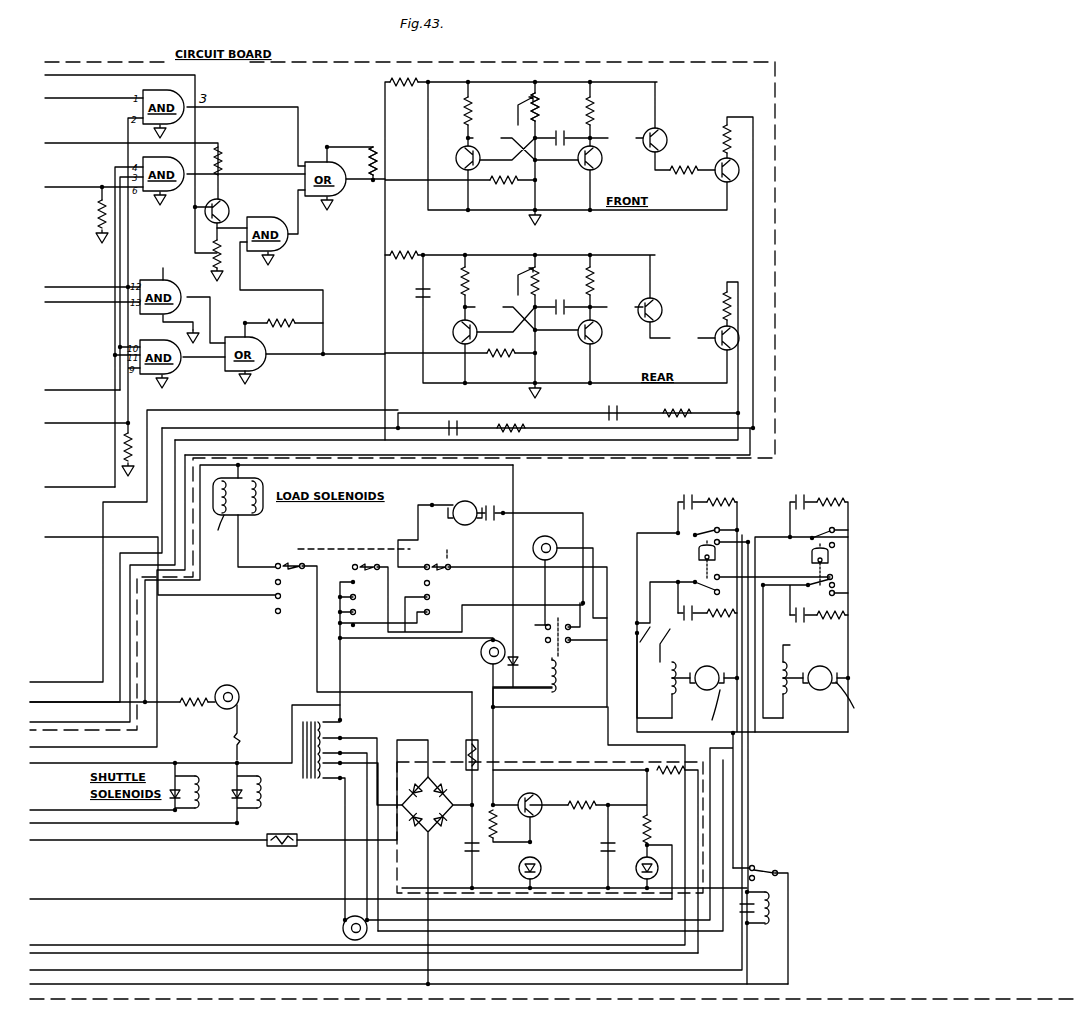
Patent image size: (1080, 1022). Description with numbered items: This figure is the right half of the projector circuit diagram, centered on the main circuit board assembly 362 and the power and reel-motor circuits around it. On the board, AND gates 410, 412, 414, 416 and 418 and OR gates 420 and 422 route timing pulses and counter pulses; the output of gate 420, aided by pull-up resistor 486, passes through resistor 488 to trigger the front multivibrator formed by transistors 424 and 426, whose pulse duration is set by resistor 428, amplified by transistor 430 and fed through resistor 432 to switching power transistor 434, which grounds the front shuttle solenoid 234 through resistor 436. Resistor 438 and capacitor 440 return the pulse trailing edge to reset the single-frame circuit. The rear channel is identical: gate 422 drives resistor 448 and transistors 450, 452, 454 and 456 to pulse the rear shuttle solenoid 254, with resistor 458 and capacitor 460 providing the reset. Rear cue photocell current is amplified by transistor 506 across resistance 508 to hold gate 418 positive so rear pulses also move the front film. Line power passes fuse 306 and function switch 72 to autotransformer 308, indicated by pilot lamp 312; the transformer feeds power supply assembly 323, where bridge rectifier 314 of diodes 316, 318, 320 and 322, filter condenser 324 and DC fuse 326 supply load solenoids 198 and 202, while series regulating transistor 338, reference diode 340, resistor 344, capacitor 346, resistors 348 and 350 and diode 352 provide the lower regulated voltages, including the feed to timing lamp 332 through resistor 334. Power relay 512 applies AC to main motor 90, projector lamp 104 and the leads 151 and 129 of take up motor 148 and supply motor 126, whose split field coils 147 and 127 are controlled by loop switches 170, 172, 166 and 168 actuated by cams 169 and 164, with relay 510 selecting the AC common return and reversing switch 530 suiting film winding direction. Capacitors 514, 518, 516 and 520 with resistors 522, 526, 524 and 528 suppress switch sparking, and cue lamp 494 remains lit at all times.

The main circuit board assembly 362 is at (777, 196).
The AND gate 410 is at (143, 92).
The AND gate 412 is at (156, 158).
The AND gate 414 is at (143, 280).
The AND gate 416 is at (180, 375).
The AND gate 418 is at (296, 250).
The OR gate 420 is at (340, 200).
The OR gate 422 is at (266, 372).
The resistor 486 is at (372, 147).
The amplifier transistor 506 is at (228, 201).
The resistance 508 is at (212, 256).
The transistor 424 is at (575, 170).
The transistor 426 is at (452, 148).
The resistor 428 is at (540, 99).
The transistor 430 is at (667, 130).
The resistor 432 is at (672, 165).
The switching power transistor 434 is at (715, 180).
The resistor 436 is at (725, 125).
The resistor 488 is at (490, 185).
The resistor 448 is at (490, 358).
The transistor 450 is at (602, 338).
The transistor 452 is at (450, 322).
The transistor 454 is at (660, 300).
The transistor 456 is at (716, 328).
The resistor 438 is at (530, 424).
The capacitor 440 is at (453, 418).
The resistor 458 is at (683, 408).
The capacitor 460 is at (620, 410).
The load solenoid 202 is at (262, 481).
The load solenoid 198 is at (211, 531).
The function switch 72 is at (307, 544).
The main motor 90 is at (468, 525).
The projector lamp 104 is at (548, 537).
The power relay 512 is at (567, 674).
The pilot lamp 312 is at (478, 662).
The timing lamp 332 is at (240, 688).
The resistor 334 is at (245, 740).
The front shuttle solenoid 234 is at (200, 780).
The rear shuttle solenoid 254 is at (262, 782).
The fuse 306 is at (278, 848).
The autotransformer 308 is at (318, 782).
The cue lamp 494 is at (341, 930).
The power supply assembly 323 is at (502, 762).
The bridge rectifier 314 is at (441, 836).
The diode 316 is at (410, 780).
The diode 318 is at (440, 780).
The diode 320 is at (435, 874).
The diode 322 is at (437, 826).
The condenser 324 is at (477, 854).
The DC fuse 326 is at (463, 735).
The series regulating transistor 338 is at (538, 797).
The reference diode 340 is at (540, 860).
The resistor 344 is at (590, 803).
The capacitor 346 is at (612, 840).
The resistor 348 is at (660, 775).
The resistor 350 is at (652, 823).
The diode 352 is at (636, 868).
The capacitor 514 is at (683, 500).
The resistor 522 is at (712, 500).
The loop switch 170 is at (700, 533).
The cam 169 is at (696, 553).
The capacitor 518 is at (692, 583).
The takeup loop sensing switch 172 is at (697, 618).
The resistor 526 is at (720, 618).
The reversing switch 530 is at (660, 642).
The split field coil 147 is at (668, 683).
The take up reversible motor 148 is at (712, 664).
The lead 151 is at (709, 714).
The capacitor 516 is at (793, 498).
The resistor 524 is at (830, 500).
The switch 166 is at (818, 533).
The cam 164 is at (812, 559).
The switch 168 is at (822, 590).
The capacitor 520 is at (796, 616).
The resistor 528 is at (830, 620).
The split field coil 127 is at (780, 660).
The reversible motor 126 is at (822, 666).
The lead 129 is at (854, 702).
The relay 510 is at (773, 926).